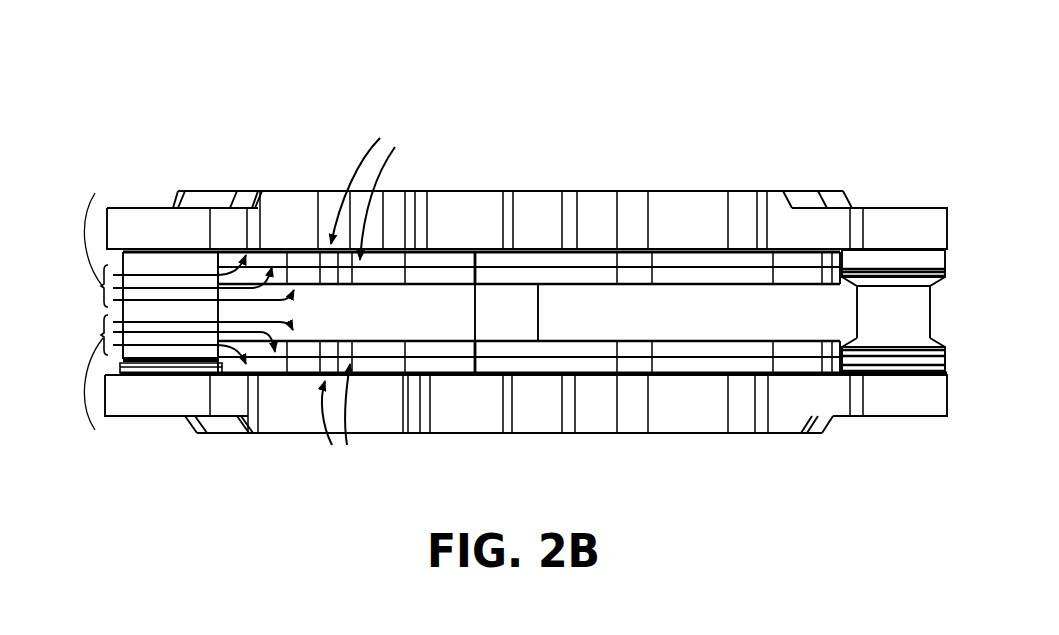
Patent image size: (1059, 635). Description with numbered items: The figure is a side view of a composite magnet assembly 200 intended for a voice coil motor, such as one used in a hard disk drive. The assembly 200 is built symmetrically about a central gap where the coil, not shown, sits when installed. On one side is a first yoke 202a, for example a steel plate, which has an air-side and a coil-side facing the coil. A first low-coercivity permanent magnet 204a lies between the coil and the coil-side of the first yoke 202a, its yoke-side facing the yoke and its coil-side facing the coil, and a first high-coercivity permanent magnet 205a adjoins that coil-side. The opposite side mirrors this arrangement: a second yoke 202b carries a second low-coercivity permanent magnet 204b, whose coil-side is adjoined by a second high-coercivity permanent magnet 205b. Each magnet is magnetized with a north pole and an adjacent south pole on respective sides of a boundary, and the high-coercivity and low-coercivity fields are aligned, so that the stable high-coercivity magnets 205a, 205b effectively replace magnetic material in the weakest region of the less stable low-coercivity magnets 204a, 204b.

The composite magnet assembly 200 is at (193, 92).
The first yoke 202a is at (895, 397).
The second yoke 202b is at (897, 223).
The first low-coercivity permanent magnet 204a is at (740, 362).
The second low-coercivity permanent magnet 204b is at (735, 258).
The first high-coercivity permanent magnet 205a is at (675, 347).
The second high-coercivity permanent magnet 205b is at (672, 273).